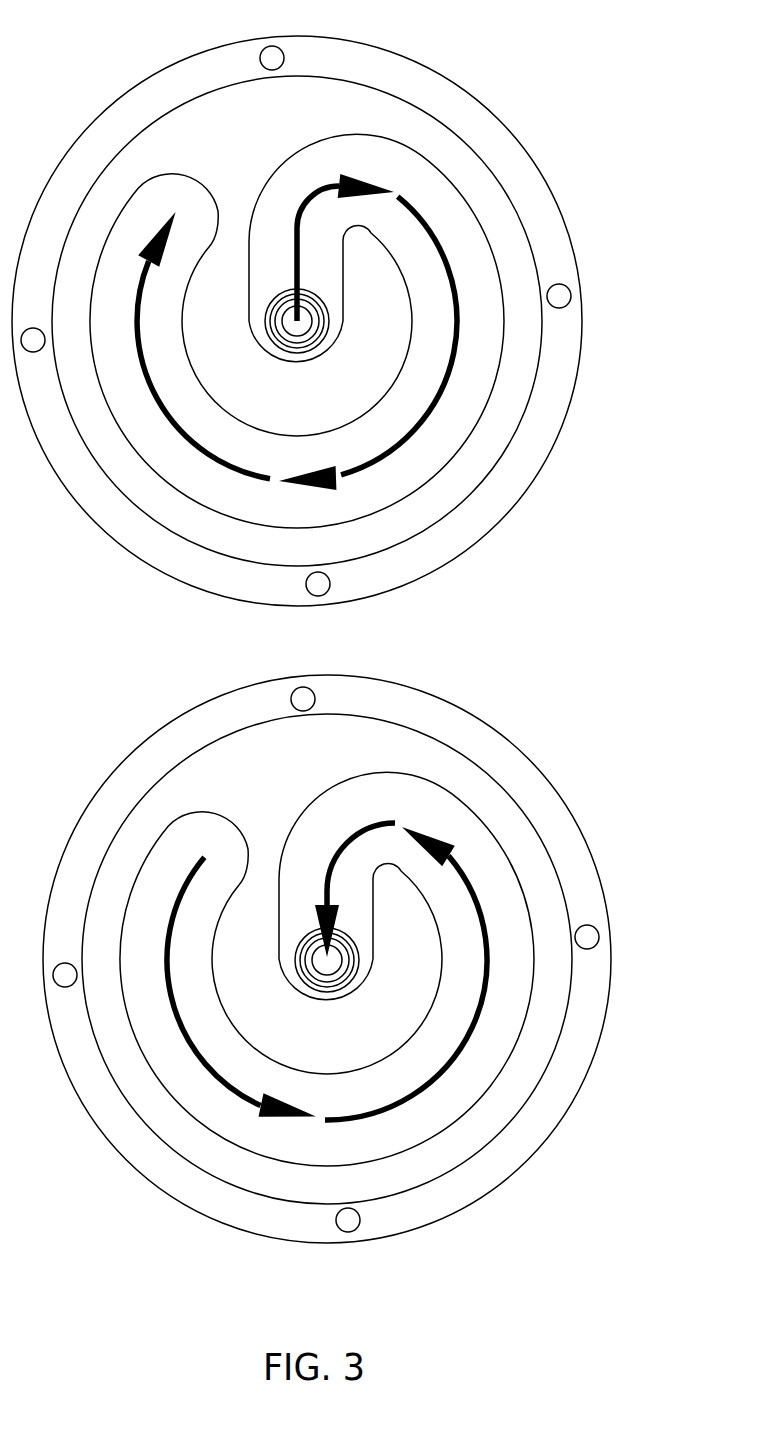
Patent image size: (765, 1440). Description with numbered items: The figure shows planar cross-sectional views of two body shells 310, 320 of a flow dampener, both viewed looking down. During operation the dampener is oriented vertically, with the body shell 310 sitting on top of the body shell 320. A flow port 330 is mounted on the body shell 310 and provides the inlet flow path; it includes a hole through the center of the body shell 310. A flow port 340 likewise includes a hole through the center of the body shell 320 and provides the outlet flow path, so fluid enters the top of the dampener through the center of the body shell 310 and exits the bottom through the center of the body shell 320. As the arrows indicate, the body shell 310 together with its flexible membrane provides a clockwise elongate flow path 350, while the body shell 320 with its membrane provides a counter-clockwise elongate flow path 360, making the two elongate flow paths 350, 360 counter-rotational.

The body shell 310 is at (362, 310).
The body shell 320 is at (377, 958).
The flow port 330 is at (310, 331).
The flow port 340 is at (352, 978).
The clockwise elongate flow path 350 is at (450, 267).
The counter-clockwise elongate flow path 360 is at (482, 918).